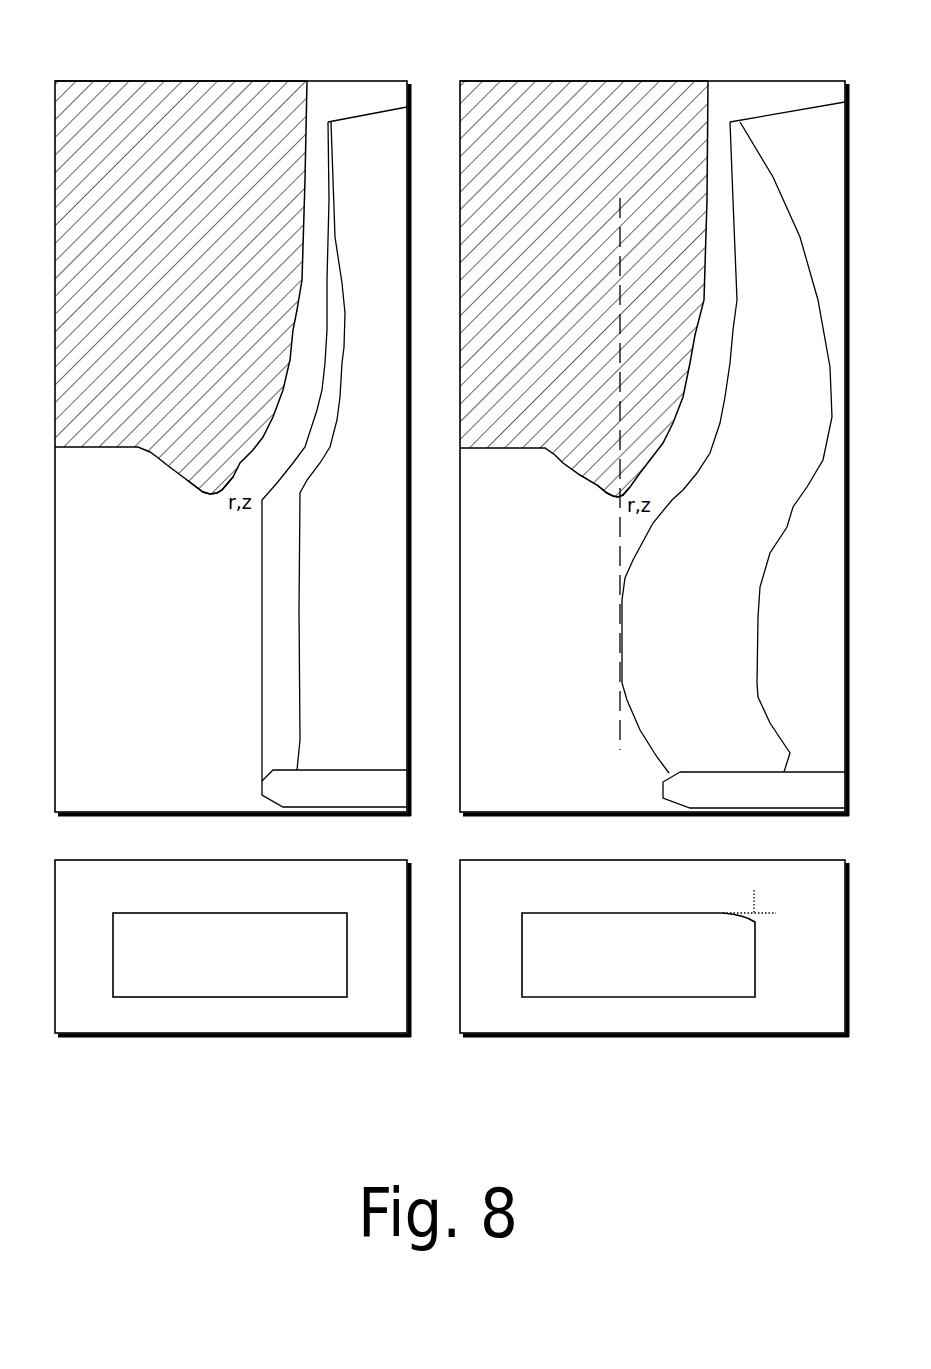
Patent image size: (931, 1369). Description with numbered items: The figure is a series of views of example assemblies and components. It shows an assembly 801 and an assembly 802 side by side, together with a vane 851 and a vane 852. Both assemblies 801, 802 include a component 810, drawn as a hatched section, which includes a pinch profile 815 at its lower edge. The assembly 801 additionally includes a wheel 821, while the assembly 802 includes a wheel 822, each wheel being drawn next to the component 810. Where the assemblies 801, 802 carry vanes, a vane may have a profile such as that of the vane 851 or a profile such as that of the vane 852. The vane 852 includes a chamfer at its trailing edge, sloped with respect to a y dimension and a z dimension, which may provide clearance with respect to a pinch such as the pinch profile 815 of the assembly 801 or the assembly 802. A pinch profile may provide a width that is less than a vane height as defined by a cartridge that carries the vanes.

The assembly 801 is at (300, 51).
The assembly 802 is at (707, 51).
The component 810 is at (136, 215).
The pinch profile 815 is at (196, 511).
The wheel 821 is at (334, 611).
The wheel 822 is at (676, 636).
The vane 851 is at (224, 965).
The vane 852 is at (624, 965).